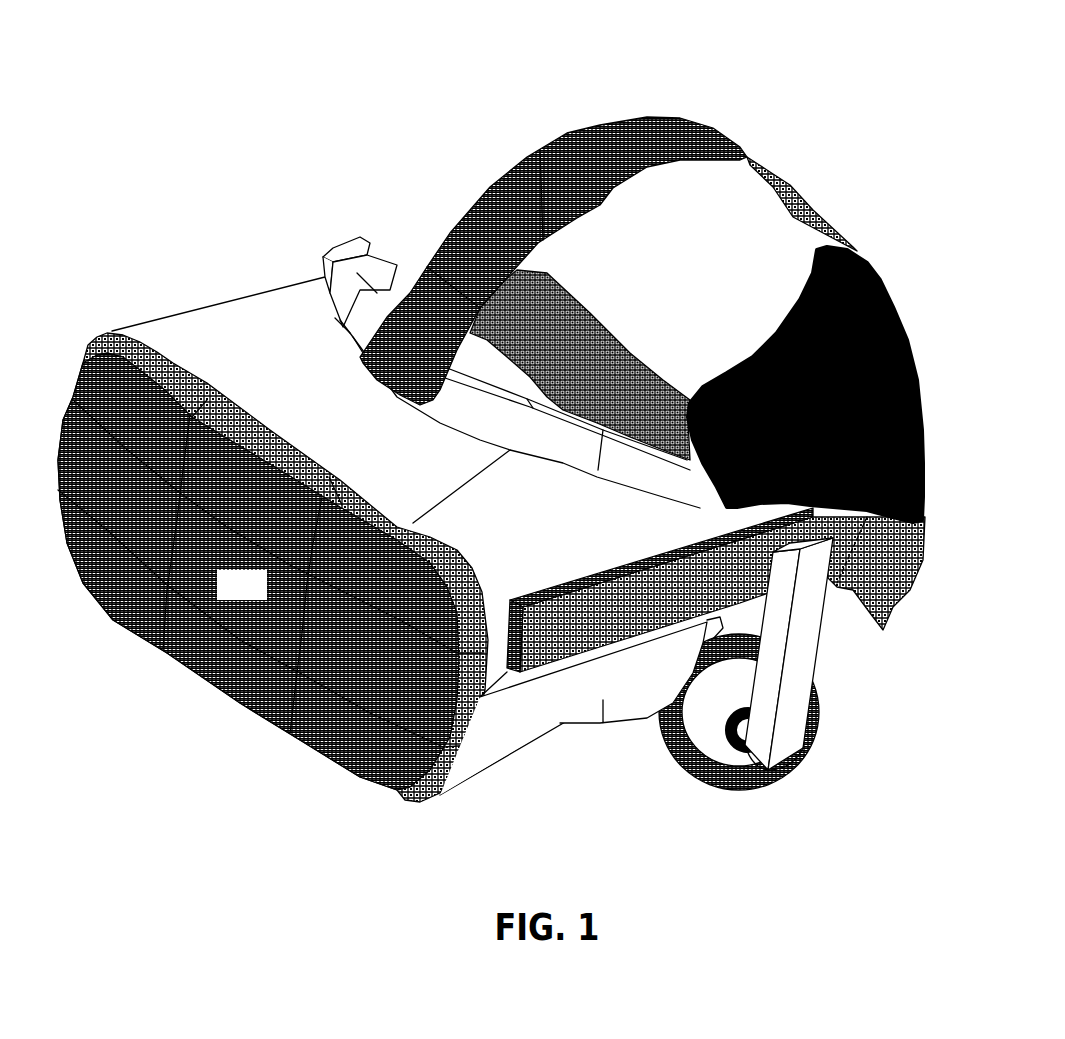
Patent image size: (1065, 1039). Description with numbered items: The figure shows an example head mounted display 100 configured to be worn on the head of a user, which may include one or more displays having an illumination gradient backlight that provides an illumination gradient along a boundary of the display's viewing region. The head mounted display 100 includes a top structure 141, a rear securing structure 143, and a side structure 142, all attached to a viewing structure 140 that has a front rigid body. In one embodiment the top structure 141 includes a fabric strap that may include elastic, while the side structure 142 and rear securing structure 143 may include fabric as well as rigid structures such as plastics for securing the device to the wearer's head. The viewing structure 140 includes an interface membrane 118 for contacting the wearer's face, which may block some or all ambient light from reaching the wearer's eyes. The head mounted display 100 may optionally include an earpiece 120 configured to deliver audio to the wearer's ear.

The head mounted display 100 is at (1010, 46).
The interface membrane 118 is at (392, 262).
The earpiece 120 is at (805, 757).
The viewing structure 140 is at (258, 332).
The top structure 141 is at (713, 128).
The side structure 142 is at (597, 314).
The rear securing structure 143 is at (905, 338).